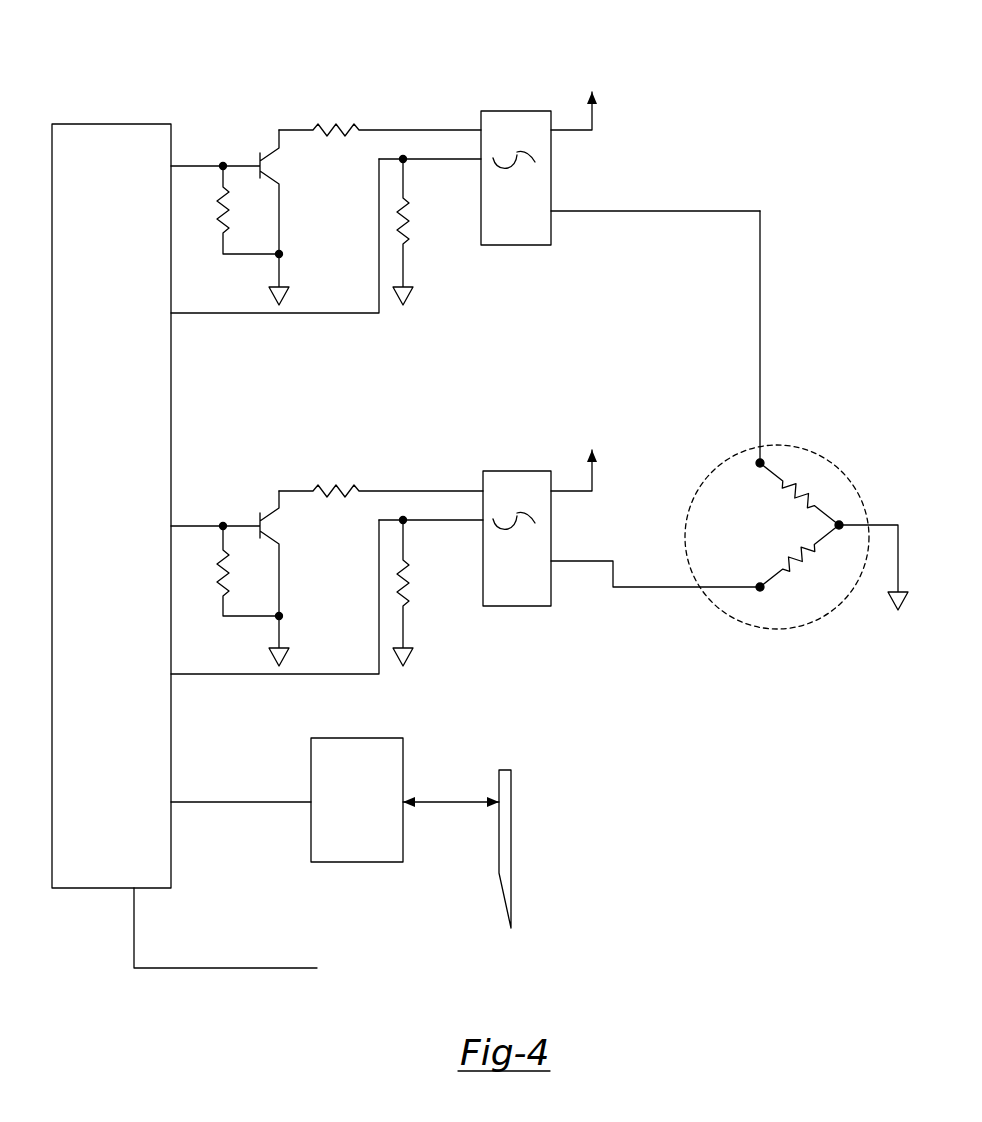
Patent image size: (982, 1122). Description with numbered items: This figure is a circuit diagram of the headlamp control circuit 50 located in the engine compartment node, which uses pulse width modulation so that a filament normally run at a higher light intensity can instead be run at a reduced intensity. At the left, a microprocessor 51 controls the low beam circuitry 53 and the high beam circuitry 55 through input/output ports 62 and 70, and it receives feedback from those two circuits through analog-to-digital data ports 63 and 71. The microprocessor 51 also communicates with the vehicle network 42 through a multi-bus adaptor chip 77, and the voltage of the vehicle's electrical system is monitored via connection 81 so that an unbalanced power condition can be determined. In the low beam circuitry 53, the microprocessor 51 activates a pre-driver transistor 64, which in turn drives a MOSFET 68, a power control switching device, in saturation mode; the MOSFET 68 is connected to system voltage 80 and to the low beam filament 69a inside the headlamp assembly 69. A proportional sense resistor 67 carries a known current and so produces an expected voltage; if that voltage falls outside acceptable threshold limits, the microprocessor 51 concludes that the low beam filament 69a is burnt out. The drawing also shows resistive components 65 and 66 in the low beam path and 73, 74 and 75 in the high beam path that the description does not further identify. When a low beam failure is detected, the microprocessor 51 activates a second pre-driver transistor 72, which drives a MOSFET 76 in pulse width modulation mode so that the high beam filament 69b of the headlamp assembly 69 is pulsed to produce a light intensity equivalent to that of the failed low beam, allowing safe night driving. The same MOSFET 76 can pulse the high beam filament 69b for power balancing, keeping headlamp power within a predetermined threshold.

The microprocessor 51 is at (140, 120).
The input/output port 62 is at (167, 154).
The analog-to-digital data port 63 is at (148, 322).
The pre-driver transistor 64 is at (251, 156).
The resistor R1 65 is at (206, 234).
The resistor R2 66 is at (339, 121).
The proportional sense resistor 67 is at (444, 245).
The MOSFET 68 is at (513, 150).
The system voltage 80 is at (589, 82).
The low beam circuitry 53 is at (790, 135).
The input/output port 70 is at (149, 503).
The analog-to-digital data port 71 is at (151, 648).
The pre-driver transistor 72 is at (251, 515).
The resistor R4 73 is at (211, 594).
The resistor R5 74 is at (334, 468).
The resistor R6 75 is at (416, 602).
The MOSFET 76 is at (518, 518).
The high beam circuitry 55 is at (548, 670).
The headlamp assembly 69 is at (796, 435).
The low beam filament 69a is at (805, 485).
The high beam filament 69b is at (801, 567).
The multi-bus adaptor chip 77 is at (331, 785).
The network 42 is at (495, 785).
The connection 81 is at (244, 966).
The control circuit 50 is at (590, 787).